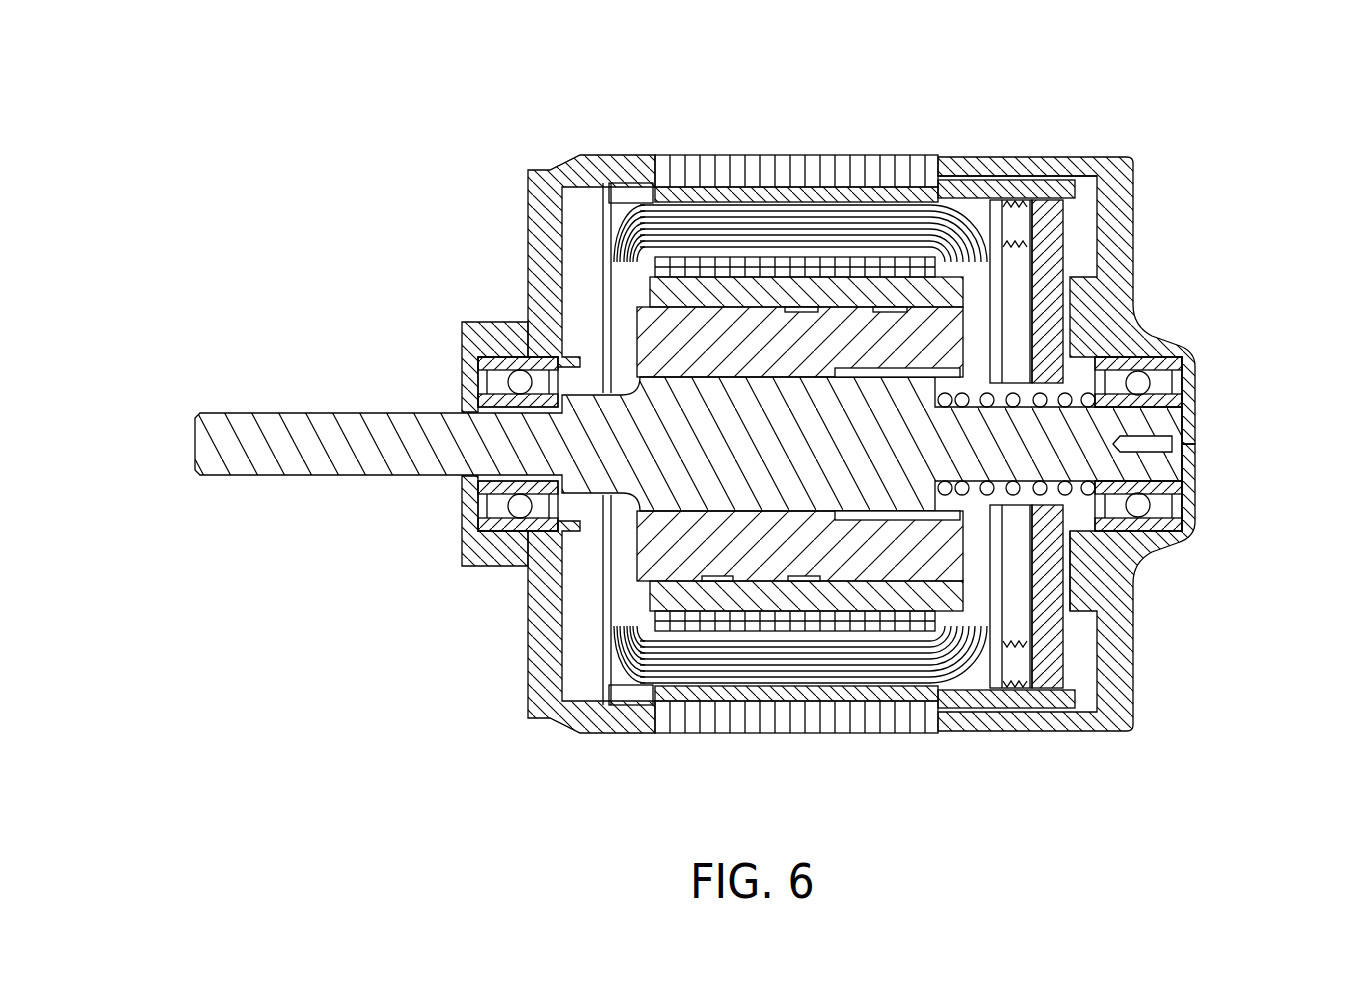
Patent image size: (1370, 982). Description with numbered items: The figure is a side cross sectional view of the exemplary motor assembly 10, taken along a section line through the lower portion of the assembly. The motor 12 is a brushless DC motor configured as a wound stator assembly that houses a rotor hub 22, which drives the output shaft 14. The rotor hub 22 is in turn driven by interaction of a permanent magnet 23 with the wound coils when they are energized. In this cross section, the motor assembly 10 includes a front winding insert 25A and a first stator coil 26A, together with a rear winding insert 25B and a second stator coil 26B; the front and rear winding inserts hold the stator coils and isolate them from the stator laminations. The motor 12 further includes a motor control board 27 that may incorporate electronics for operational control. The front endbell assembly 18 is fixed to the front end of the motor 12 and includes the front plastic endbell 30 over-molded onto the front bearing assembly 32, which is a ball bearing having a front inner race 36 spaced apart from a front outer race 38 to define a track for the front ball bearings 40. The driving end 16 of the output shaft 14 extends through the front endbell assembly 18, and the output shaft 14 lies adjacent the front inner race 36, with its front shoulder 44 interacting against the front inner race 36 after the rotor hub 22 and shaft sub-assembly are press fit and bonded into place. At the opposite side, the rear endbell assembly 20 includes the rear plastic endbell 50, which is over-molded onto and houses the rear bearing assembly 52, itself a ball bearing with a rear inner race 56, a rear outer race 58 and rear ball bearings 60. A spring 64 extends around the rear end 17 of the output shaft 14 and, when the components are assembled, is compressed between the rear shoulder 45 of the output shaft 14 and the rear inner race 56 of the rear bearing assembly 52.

The motor assembly 10 is at (522, 108).
The motor 12 is at (715, 137).
The output shaft 14 is at (815, 470).
The driving end 16 is at (195, 440).
The rear end 17 is at (1147, 467).
The front endbell assembly 18 is at (513, 248).
The rear endbell assembly 20 is at (1145, 245).
The rotor hub 22 is at (935, 320).
The permanent magnet 23 is at (858, 290).
The front winding insert 25A is at (628, 705).
The rear winding insert 25B is at (970, 190).
The first stator coil 26A is at (745, 725).
The second stator coil 26B is at (832, 215).
The motor control board 27 is at (1100, 560).
The front plastic endbell 30 is at (545, 680).
The front bearing assembly 32 is at (422, 338).
The front inner race 36 is at (485, 495).
The front outer race 38 is at (470, 345).
The front ball bearings 40 is at (485, 375).
The front shoulder 44 is at (448, 333).
The rear shoulder 45 is at (1015, 640).
The rear plastic endbell 50 is at (1122, 172).
The rear bearing assembly 52 is at (1208, 350).
The rear inner race 56 is at (1205, 343).
The rear outer race 58 is at (1162, 355).
The rear ball bearings 60 is at (1140, 503).
The spring 64 is at (1005, 512).